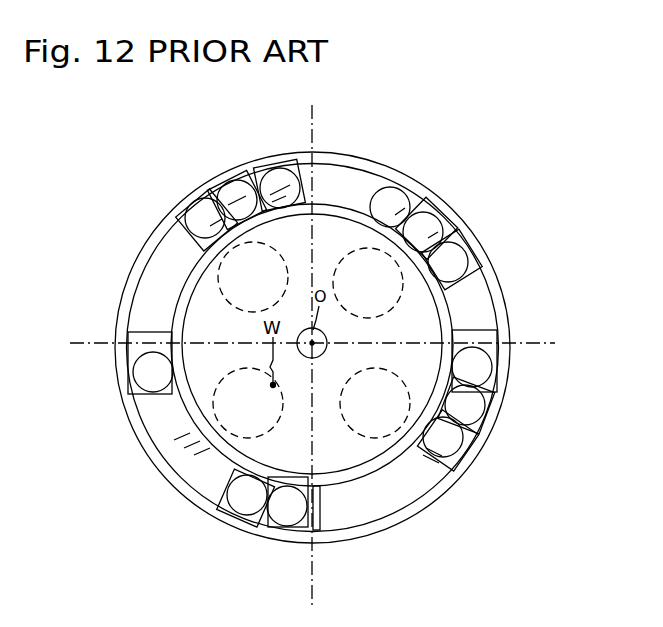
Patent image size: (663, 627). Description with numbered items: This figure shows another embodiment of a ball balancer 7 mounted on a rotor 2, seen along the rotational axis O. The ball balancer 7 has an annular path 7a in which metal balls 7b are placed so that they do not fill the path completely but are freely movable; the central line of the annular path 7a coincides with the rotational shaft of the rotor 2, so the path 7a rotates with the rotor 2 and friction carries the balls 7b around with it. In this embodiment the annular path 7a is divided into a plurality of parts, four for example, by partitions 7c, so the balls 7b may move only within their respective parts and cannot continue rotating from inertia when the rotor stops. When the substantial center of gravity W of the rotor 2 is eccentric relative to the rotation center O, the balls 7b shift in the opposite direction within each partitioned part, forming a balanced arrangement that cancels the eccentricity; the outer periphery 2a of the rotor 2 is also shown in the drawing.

The ball balancer 7 is at (190, 183).
The annular path 7a is at (165, 270).
The balls 7b is at (246, 498).
The partitions 7c is at (130, 365).
The rotor 2 is at (207, 384).
The outer periphery / through hole of rotating body 2a is at (341, 257).